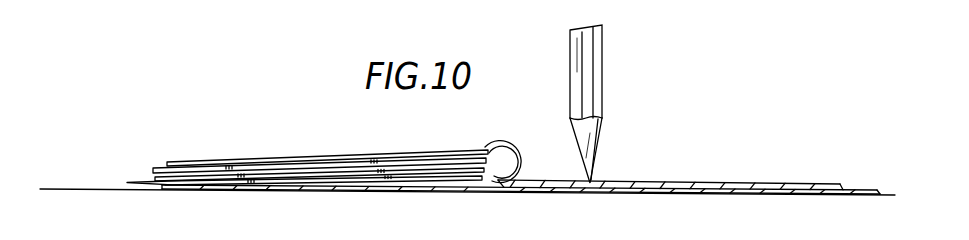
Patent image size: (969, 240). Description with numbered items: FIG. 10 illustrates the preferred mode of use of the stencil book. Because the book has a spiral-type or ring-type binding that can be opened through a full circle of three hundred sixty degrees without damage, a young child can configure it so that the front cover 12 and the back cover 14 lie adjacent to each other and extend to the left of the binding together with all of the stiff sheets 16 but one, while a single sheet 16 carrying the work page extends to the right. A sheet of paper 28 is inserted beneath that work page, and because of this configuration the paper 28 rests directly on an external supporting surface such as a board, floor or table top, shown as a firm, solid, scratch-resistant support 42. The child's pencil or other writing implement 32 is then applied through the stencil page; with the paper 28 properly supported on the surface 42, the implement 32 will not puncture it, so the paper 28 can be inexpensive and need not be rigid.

The front cover 12 is at (153, 167).
The back cover 14 is at (155, 177).
The sheets 16 is at (140, 182).
The sheet of paper 28 is at (853, 188).
The writing implement 32 is at (602, 63).
The support 42 is at (61, 188).